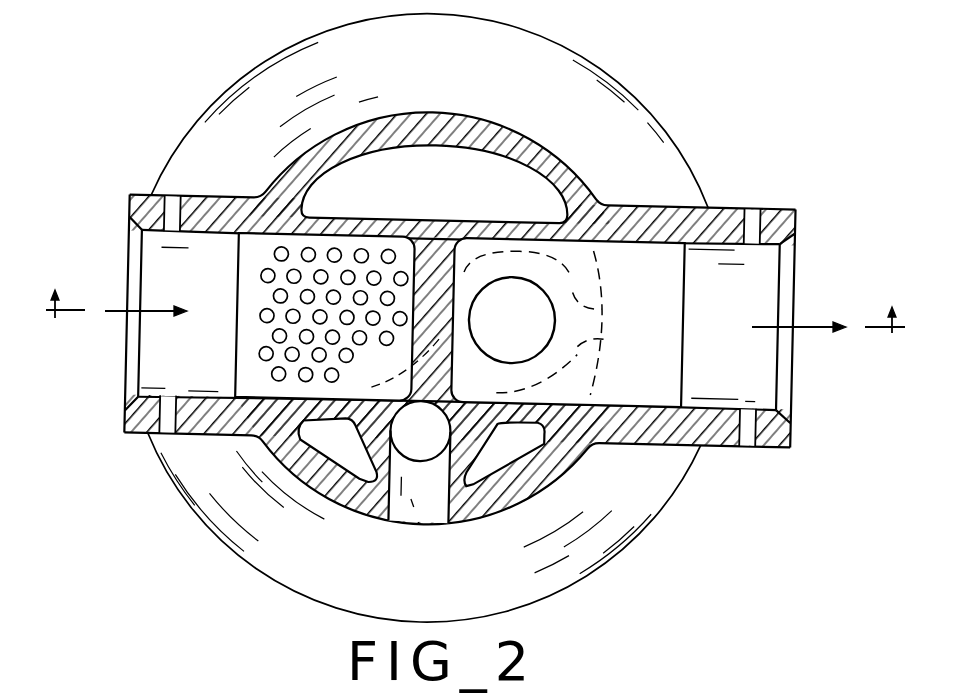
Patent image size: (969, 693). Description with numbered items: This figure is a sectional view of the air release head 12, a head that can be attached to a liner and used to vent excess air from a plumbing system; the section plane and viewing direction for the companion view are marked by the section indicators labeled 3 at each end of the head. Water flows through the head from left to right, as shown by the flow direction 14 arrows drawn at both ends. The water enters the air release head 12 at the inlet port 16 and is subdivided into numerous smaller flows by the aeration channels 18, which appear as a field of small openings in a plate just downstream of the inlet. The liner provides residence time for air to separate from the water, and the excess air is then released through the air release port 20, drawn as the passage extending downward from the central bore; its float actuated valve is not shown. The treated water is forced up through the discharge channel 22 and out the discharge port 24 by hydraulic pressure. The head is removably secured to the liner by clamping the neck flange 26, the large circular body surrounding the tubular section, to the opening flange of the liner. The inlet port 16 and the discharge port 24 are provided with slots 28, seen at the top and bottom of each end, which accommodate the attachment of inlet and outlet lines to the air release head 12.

The air release head 12 is at (620, 33).
The neck flange 26 is at (291, 58).
The slots 28 is at (170, 198).
The inlet port 16 is at (122, 387).
The discharge port 24 is at (794, 376).
The aeration channels 18 is at (258, 356).
The discharge channel 22 is at (528, 313).
The air release port 20 is at (417, 504).
The flow direction 14 is at (152, 312).
The section line 3- 3 is at (475, 297).